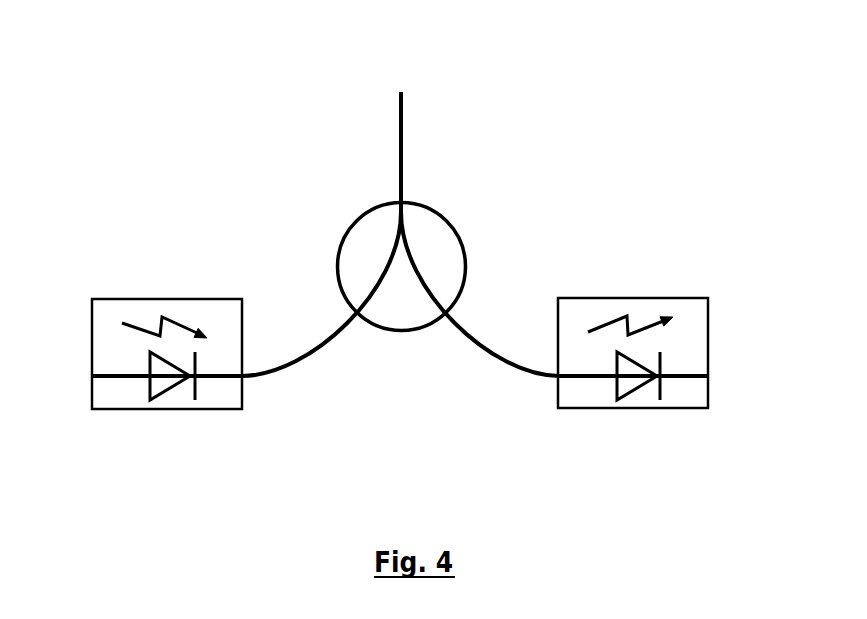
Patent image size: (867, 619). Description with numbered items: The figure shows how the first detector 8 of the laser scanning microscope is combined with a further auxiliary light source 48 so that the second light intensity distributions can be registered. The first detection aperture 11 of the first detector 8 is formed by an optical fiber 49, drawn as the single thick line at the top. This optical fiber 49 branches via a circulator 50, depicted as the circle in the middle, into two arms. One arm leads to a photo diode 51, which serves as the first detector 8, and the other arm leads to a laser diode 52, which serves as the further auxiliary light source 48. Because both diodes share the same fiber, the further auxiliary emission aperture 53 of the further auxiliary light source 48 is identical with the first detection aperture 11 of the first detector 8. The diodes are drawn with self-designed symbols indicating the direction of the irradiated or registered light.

The first detector 8 is at (165, 401).
The photo diode 51 is at (152, 412).
The first detection aperture 11 is at (468, 118).
The further auxiliary emission aperture 53 is at (468, 118).
The optical fiber 49 is at (401, 158).
The circulator 50 is at (415, 330).
The further auxiliary light source 48 is at (640, 400).
The laser diode 52 is at (663, 412).